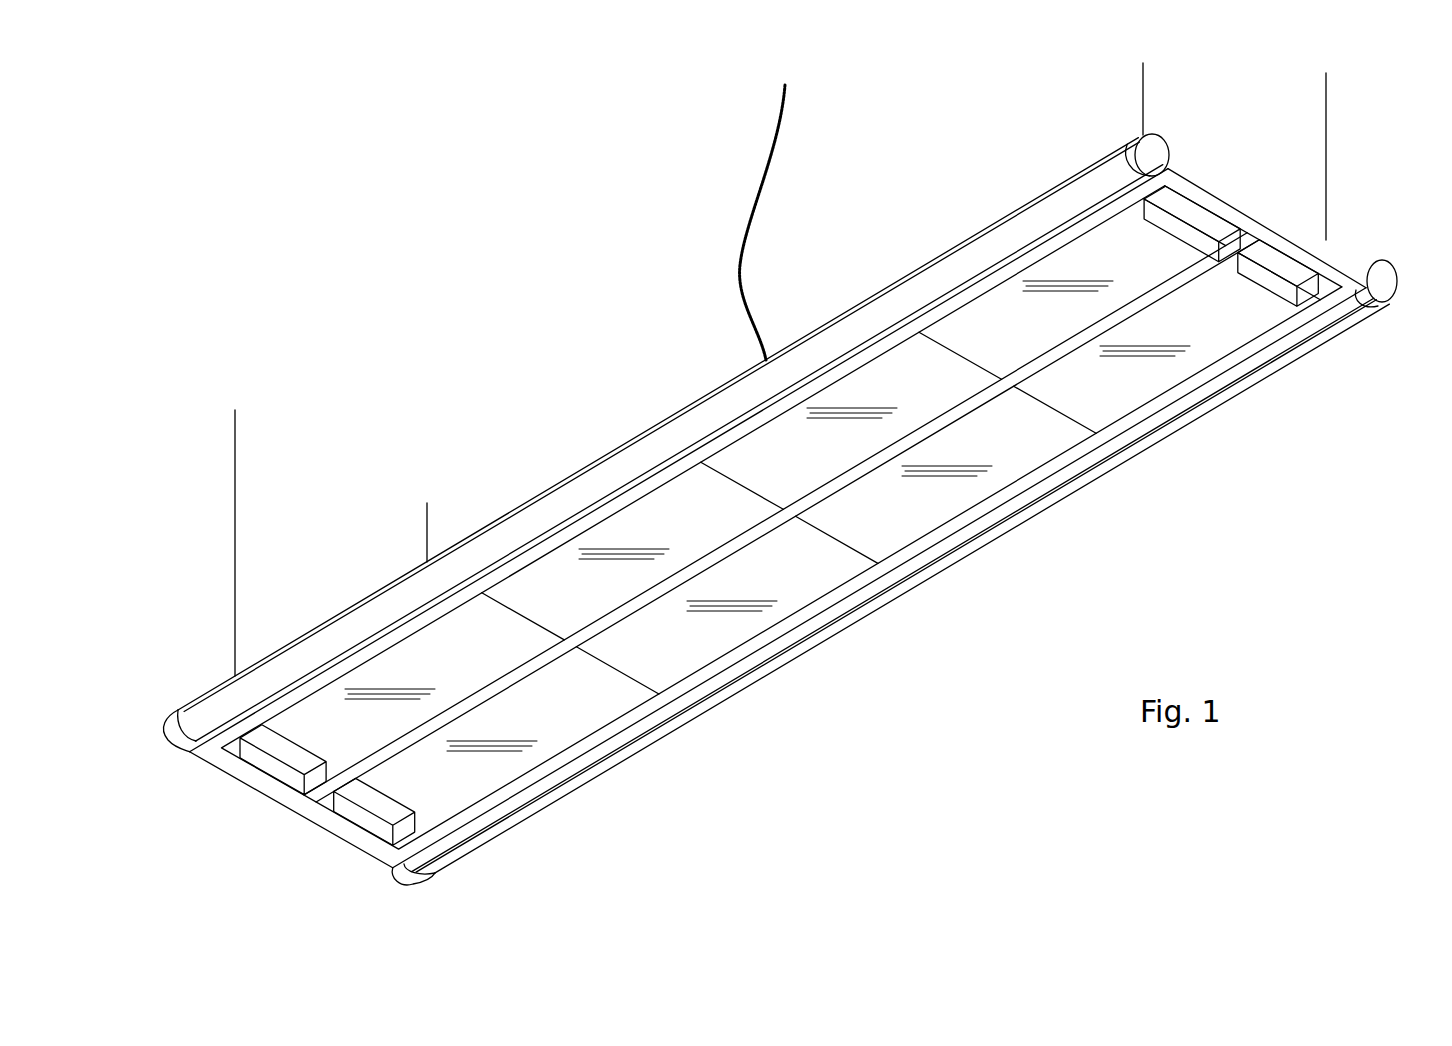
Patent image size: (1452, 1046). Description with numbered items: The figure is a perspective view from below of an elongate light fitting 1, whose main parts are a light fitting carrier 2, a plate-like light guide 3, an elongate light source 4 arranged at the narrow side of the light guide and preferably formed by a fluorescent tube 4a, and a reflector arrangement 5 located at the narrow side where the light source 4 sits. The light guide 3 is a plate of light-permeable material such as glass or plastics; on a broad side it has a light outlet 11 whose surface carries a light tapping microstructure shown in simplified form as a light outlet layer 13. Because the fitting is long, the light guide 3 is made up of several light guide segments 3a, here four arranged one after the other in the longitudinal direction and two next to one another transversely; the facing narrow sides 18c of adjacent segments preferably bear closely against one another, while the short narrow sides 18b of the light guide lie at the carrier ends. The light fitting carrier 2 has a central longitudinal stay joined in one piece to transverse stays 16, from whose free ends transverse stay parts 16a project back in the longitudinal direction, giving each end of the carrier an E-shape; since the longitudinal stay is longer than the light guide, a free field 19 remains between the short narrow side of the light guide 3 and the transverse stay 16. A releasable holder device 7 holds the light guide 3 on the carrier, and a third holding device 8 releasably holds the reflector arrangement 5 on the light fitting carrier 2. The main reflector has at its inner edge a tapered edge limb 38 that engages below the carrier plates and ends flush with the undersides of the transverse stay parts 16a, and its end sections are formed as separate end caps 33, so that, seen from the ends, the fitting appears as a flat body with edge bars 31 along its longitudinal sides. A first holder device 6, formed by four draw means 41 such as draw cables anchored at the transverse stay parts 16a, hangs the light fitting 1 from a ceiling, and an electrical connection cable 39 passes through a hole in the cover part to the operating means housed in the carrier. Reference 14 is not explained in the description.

The light fitting 1 is at (802, 474).
The light fitting carrier 2 is at (778, 492).
The light guide 3 is at (1167, 386).
The light guide segments 3a is at (707, 534).
The light source 4 is at (800, 492).
The fluorescent tube 4a is at (1060, 175).
The reflector arrangement 5 is at (802, 474).
The first holder device 6 is at (331, 543).
The holder device 7 is at (408, 821).
The third holding device 8 is at (188, 758).
The light outlet 11 is at (1167, 386).
The light outlet layer 13 is at (1167, 386).
The cover plate 14 is at (1020, 452).
The transverse stay 16 is at (1262, 212).
The transverse stay part 16a is at (1165, 175).
The short narrow sides 18b is at (1152, 218).
The narrow sides of the light guide segments 18c is at (608, 672).
The free field 19 is at (1280, 252).
The edge bars 31 is at (1284, 185).
The end caps 33 is at (1163, 133).
The edge limb 38 is at (503, 575).
The electrical connection cable 39 is at (778, 165).
The draw means 41 is at (240, 440).